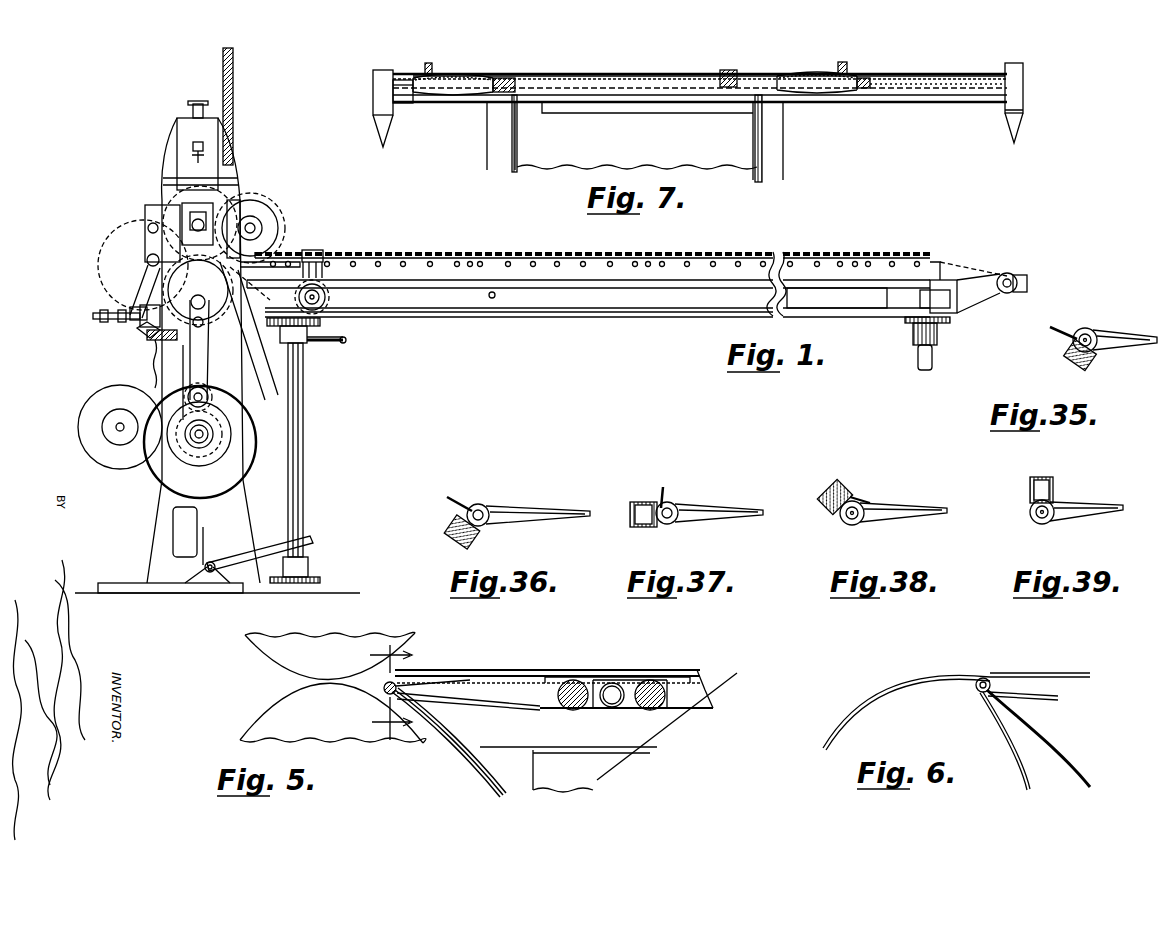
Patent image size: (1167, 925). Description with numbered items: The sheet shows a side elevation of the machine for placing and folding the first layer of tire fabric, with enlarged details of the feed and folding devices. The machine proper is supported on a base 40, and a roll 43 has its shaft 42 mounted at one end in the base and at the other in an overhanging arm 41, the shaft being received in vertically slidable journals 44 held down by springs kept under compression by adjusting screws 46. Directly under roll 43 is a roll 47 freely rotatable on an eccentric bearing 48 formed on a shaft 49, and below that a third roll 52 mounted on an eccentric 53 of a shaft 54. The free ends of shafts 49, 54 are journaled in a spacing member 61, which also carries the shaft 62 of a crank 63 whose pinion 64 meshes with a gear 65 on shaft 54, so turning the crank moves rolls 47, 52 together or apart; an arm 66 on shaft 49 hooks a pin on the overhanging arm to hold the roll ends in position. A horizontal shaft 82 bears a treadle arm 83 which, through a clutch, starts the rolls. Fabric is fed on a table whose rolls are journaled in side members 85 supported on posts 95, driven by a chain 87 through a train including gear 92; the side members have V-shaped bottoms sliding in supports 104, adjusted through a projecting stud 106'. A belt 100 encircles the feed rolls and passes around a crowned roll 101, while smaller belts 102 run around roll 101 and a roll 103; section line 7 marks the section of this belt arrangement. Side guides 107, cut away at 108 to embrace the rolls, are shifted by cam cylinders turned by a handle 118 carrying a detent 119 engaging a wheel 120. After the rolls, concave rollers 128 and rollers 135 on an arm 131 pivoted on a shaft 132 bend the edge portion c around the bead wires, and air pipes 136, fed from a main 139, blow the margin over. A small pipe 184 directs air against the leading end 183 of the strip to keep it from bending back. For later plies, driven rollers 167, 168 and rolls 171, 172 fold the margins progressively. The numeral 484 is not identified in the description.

In FIG. 1, the base 40 is at (170, 158).
In FIG. 1, the overhanging arm 41 is at (213, 153).
In FIG. 1, the shaft 42 is at (195, 222).
In FIG. 1, the roll 43 is at (235, 198).
In FIG. 5, the roll 43 is at (277, 650).
In FIG. 1, the vertically slidable journals 44 is at (198, 201).
In FIG. 1, the adjusting screws 46 is at (199, 100).
In FIG. 1, the roll 47 is at (247, 331).
In FIG. 5, the roll 47 is at (263, 733).
In FIG. 6, the roll 47 is at (873, 717).
In FIG. 1, the eccentric bearing 48 is at (135, 300).
In FIG. 1, the shaft 49 is at (198, 291).
In FIG. 1, the third roll 52 is at (247, 463).
In FIG. 1, the eccentric 53 is at (220, 457).
In FIG. 1, the shaft 54 is at (200, 435).
In FIG. 1, the spacing member 61 is at (192, 370).
In FIG. 1, the shaft 62 is at (207, 397).
In FIG. 1, the crank 63 is at (202, 357).
In FIG. 1, the pinion 64 is at (207, 413).
In FIG. 1, the gear 65 is at (167, 447).
In FIG. 1, the arm 66 is at (250, 299).
In FIG. 1, the horizontal shaft 82 is at (207, 580).
In FIG. 1, the treadle arm 83 is at (313, 545).
In FIG. 1, the side members 85 is at (623, 273).
In FIG. 7, the side members 85 is at (378, 130).
In FIG. 5, the side members 85 is at (566, 731).
In FIG. 1, the chain 87 is at (963, 263).
In FIG. 1, the gear 92 is at (283, 192).
In FIG. 1, the posts 95 is at (303, 505).
In FIG. 7, the belt 100 is at (595, 75).
In FIG. 5, the belt 100 is at (637, 677).
In FIG. 7, the roll 101 is at (700, 75).
In FIG. 5, the roll 101 is at (413, 677).
In FIG. 6, the roll 101 is at (987, 680).
In FIG. 7, the smaller belts 102 is at (480, 72).
In FIG. 5, the smaller belts 102 is at (493, 680).
In FIG. 6, the smaller belts 102 is at (1053, 700).
In FIG. 7, the roll 103 is at (933, 95).
In FIG. 5, the roll 103 is at (577, 687).
In FIG. 1, the supports 104 is at (680, 313).
In FIG. 5, the supports 104 is at (597, 780).
In FIG. 1, the projecting stud 106' is at (487, 341).
In FIG. 7, the side guides 107 is at (434, 62).
In FIG. 5, the side guides 107 is at (560, 667).
In FIG. 5, the cut away 108 is at (593, 680).
In FIG. 1, the handle 118 is at (317, 253).
In FIG. 1, the detent 119 is at (320, 277).
In FIG. 1, the wheel 120 is at (333, 305).
In FIG. 1, the concave rollers 128 is at (137, 328).
In FIG. 35, the concave rollers 128 is at (1073, 355).
In FIG. 1, the arm 131 is at (175, 290).
In FIG. 1, the shaft 132 is at (147, 257).
In FIG. 1, the rollers 135 is at (155, 343).
In FIG. 1, the pipes 136 is at (157, 376).
In FIG. 1, the main 139 is at (234, 80).
In FIG. 36, the rollers 167 is at (457, 527).
In FIG. 37, the rollers 168 is at (647, 500).
In FIG. 38, the rolls 171 is at (847, 492).
In FIG. 39, the rolls 172 is at (1053, 485).
In FIG. 6, the leading end 183 is at (978, 697).
In FIG. 7, the small pipe 184 is at (514, 168).
In FIG. 5, the small pipe 184 is at (477, 770).
In FIG. 6, the small pipe 184 is at (1063, 757).
In FIG. 1, the rod 484 is at (318, 343).
In FIG. 35, the edge portion c is at (1058, 324).
In FIG. 36, the edge portion c is at (480, 498).
In FIG. 37, the edge portion c is at (675, 498).
In FIG. 38, the edge portion c is at (870, 500).
In FIG. 5, the section line 7 is at (382, 692).